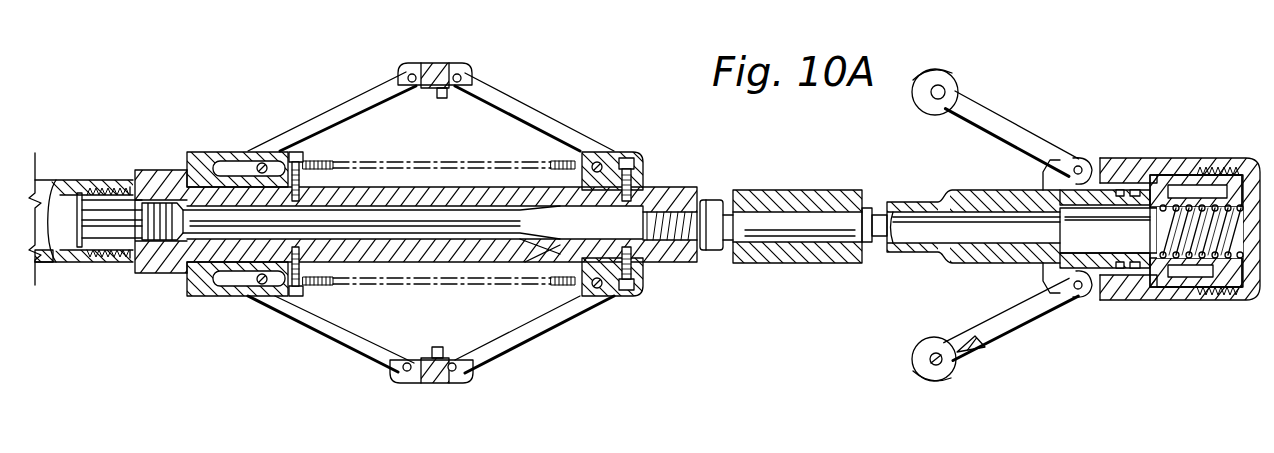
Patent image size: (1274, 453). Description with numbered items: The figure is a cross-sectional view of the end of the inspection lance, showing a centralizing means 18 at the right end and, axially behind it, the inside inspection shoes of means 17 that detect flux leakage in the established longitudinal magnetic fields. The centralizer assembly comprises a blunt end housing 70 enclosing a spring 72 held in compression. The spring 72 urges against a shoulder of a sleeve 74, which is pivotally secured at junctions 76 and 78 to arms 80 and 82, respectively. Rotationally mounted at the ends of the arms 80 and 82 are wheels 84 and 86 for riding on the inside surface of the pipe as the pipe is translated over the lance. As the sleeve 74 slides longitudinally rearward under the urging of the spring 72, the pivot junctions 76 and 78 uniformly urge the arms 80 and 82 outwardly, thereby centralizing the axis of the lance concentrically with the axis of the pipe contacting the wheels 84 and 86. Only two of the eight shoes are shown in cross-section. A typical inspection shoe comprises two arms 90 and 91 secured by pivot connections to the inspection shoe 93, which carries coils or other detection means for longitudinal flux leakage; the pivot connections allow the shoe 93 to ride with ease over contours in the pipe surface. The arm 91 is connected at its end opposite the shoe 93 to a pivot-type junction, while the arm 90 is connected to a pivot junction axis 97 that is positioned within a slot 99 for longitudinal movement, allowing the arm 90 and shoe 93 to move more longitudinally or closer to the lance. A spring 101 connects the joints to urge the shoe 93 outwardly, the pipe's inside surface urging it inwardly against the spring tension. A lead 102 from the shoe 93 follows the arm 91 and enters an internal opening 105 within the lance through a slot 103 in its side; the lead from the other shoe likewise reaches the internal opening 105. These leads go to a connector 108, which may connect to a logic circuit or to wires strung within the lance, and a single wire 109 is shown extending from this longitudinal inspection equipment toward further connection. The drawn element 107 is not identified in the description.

The inside inspection shoe means 17 is at (621, 138).
The centralizing means 18 is at (1214, 148).
The blunt end housing 70 is at (1140, 160).
The spring 72 is at (1200, 262).
The sleeve 74 is at (1145, 266).
The pivot junction 76 is at (1082, 163).
The pivot junction 78 is at (1079, 293).
The arm 80 is at (1000, 118).
The arm 82 is at (1030, 314).
The wheel 84 is at (958, 77).
The wheel 86 is at (952, 375).
The arm 90 is at (330, 112).
The arm 91 is at (513, 108).
The inspection shoe 93 is at (425, 62).
The pivot junction axis 97 is at (265, 163).
The slot 99 is at (232, 160).
The spring 101 is at (333, 158).
The lead 102 is at (465, 100).
The slot 103 is at (562, 204).
The internal opening 105 is at (633, 230).
The rod taper 107 is at (540, 256).
The connector 108 is at (162, 201).
The wire 109 is at (108, 180).